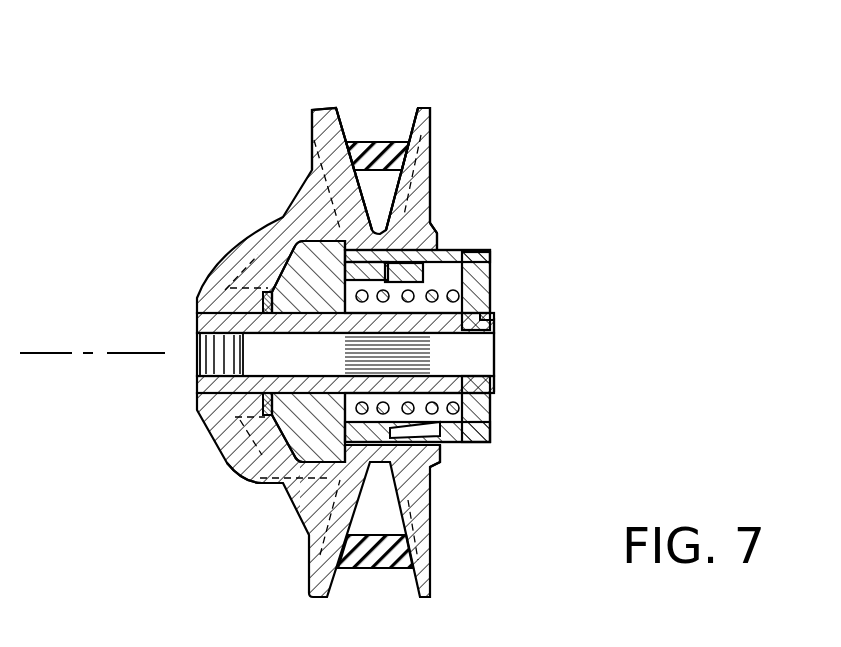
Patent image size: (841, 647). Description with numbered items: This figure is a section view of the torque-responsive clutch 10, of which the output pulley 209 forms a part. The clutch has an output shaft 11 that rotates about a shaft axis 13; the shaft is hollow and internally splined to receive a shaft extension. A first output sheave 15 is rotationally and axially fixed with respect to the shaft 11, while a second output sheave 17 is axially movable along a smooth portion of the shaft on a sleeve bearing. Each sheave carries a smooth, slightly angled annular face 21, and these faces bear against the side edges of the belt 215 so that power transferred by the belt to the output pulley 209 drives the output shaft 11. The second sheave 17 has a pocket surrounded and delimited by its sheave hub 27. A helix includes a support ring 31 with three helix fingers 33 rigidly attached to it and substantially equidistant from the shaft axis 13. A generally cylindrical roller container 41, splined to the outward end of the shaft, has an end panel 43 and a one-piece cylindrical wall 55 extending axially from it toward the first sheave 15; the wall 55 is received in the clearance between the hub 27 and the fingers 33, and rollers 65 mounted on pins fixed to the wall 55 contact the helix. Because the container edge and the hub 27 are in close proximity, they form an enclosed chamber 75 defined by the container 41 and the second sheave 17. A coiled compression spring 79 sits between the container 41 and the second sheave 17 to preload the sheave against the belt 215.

The torque-responsive clutch 10 is at (516, 188).
The output shaft 11 is at (494, 327).
The shaft axis 13 is at (42, 354).
The first output sheave 15 is at (314, 128).
The second output sheave 17 is at (432, 135).
The annular face 21 is at (345, 108).
The sheave hub 27 is at (440, 237).
The support ring 31 is at (292, 484).
The helix fingers 33 is at (333, 247).
The roller container 41 is at (507, 446).
The end panel 43 is at (490, 277).
The cylindrical wall 55 is at (452, 443).
The roller 65 is at (488, 250).
The enclosed chamber 75 is at (468, 443).
The coiled compression spring 79 is at (490, 262).
The output pulley 209 is at (266, 89).
The belt 215 is at (373, 143).